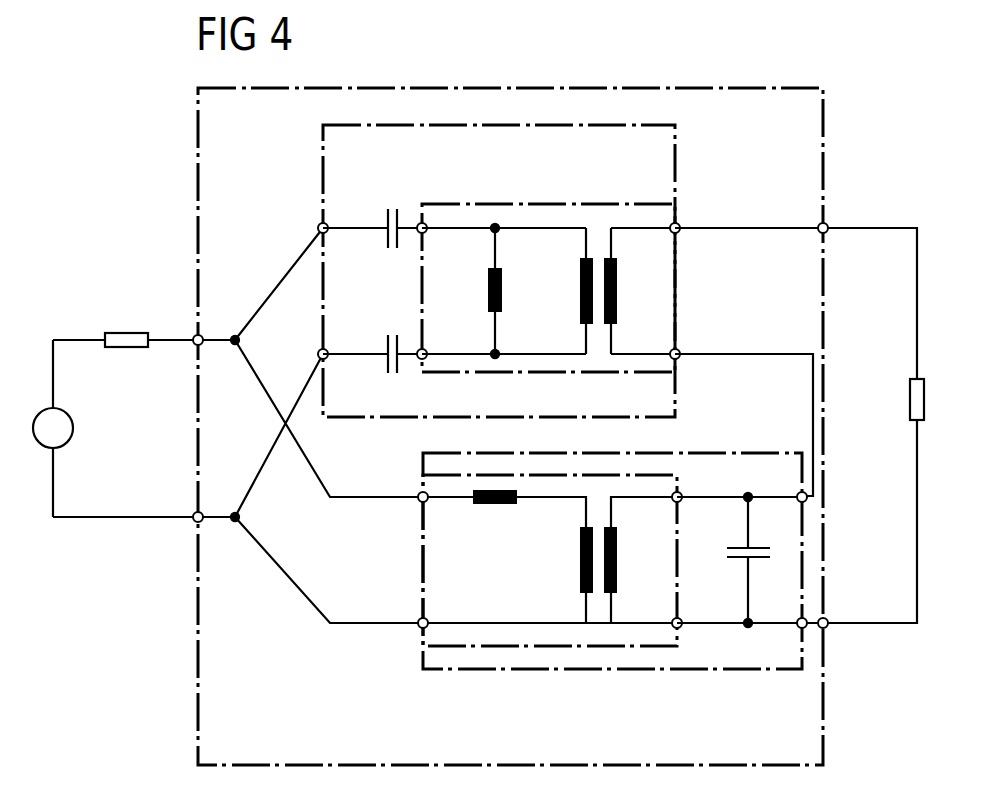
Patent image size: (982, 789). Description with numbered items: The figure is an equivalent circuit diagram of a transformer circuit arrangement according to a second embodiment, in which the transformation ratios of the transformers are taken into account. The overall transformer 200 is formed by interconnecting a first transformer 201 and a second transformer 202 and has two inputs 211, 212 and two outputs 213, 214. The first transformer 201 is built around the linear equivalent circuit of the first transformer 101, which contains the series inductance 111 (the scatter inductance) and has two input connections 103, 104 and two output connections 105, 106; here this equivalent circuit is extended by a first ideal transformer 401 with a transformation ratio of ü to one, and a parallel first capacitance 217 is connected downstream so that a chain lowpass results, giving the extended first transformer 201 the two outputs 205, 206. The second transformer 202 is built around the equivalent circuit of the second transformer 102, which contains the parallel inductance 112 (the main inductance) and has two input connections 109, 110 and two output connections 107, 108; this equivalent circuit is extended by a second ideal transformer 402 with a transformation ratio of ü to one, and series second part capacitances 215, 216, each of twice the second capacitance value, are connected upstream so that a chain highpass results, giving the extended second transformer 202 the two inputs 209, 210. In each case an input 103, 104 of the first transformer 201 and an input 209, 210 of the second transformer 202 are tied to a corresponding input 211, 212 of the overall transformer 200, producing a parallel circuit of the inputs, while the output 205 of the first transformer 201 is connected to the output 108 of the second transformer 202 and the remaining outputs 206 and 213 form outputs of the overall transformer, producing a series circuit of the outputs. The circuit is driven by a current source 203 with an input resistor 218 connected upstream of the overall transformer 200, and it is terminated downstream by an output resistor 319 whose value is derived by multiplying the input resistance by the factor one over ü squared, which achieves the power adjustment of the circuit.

The overall transformer 200 is at (198, 645).
The first transformer 201 is at (499, 670).
The second transformer 202 is at (323, 145).
The first transformer 101 is at (600, 648).
The second transformer 102 is at (543, 206).
The input connection 103 is at (420, 502).
The input connection 104 is at (420, 619).
The output connection 105 is at (681, 500).
The output connection 106 is at (681, 620).
The output connection 107 is at (678, 225).
The output connection 108 is at (678, 359).
The input connection 109 is at (427, 233).
The input connection 110 is at (427, 351).
The series inductance 111 is at (514, 506).
The parallel inductance 112 is at (503, 275).
The current source 203 is at (74, 422).
The output 205 is at (798, 494).
The output 206 is at (798, 628).
The input 209 is at (320, 225).
The input 210 is at (320, 351).
The input 211 is at (194, 343).
The input 212 is at (194, 518).
The output 213 is at (826, 225).
The output 214 is at (828, 627).
The second part capacitance 215 is at (399, 224).
The second part capacitance 216 is at (401, 364).
The first capacitance 217 is at (755, 562).
The input resistor 218 is at (147, 333).
The output resistor 319 is at (910, 388).
The first ideal transformer 401 is at (580, 576).
The second ideal transformer 402 is at (580, 310).